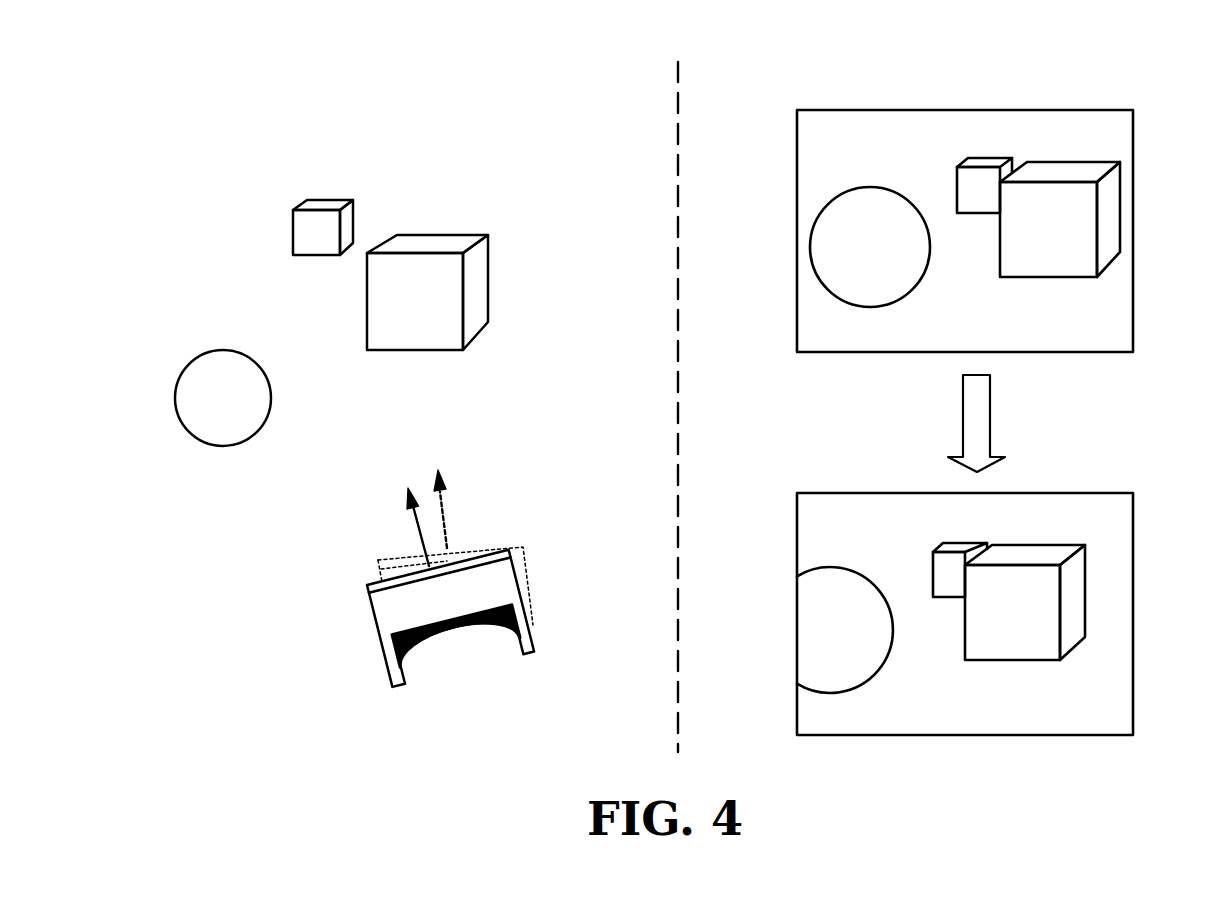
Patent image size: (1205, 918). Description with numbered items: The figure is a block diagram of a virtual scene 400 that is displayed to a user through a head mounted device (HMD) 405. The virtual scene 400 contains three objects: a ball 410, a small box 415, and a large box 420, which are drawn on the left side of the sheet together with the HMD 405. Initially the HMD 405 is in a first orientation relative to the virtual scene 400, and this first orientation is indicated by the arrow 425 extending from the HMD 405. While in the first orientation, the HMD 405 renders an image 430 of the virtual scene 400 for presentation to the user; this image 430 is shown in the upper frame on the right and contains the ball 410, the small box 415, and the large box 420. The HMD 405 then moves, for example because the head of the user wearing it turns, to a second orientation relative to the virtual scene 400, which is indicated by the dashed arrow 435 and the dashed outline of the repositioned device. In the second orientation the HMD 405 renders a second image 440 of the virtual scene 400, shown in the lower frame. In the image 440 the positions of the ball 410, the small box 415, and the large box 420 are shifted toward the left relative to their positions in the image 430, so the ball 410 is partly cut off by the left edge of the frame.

The virtual scene 400 is at (562, 85).
The head mounted device 405 is at (380, 633).
The ball 410 is at (178, 382).
The small box 415 is at (292, 230).
The large box 420 is at (365, 327).
The arrow 425 is at (418, 540).
The image 430 is at (1135, 160).
The arrow 435 is at (442, 520).
The image 440 is at (1135, 545).